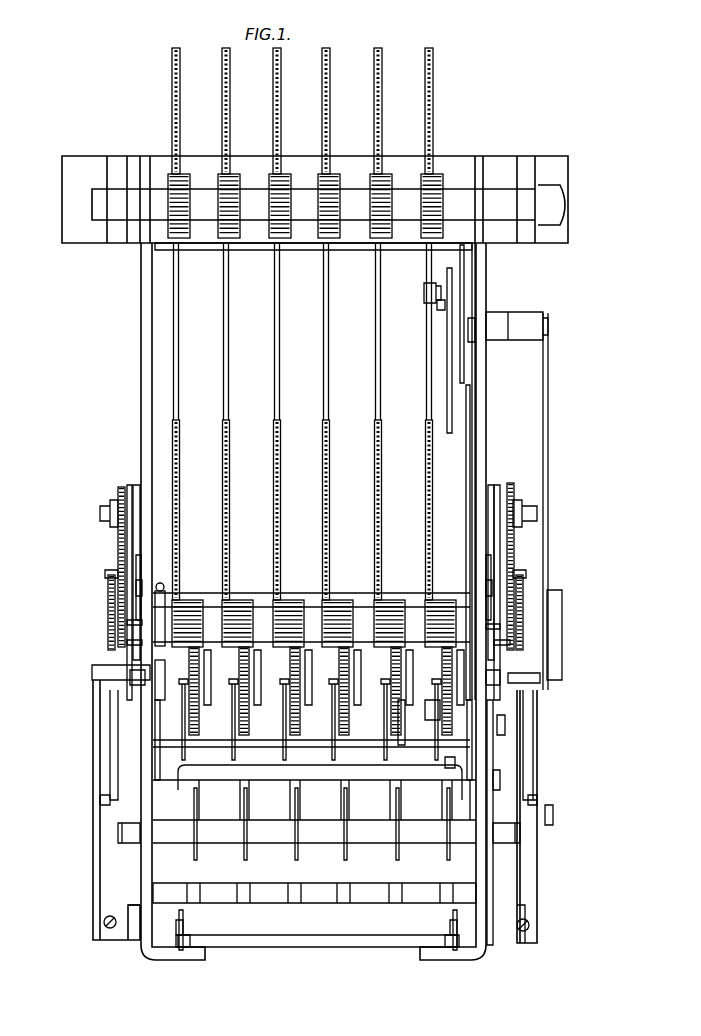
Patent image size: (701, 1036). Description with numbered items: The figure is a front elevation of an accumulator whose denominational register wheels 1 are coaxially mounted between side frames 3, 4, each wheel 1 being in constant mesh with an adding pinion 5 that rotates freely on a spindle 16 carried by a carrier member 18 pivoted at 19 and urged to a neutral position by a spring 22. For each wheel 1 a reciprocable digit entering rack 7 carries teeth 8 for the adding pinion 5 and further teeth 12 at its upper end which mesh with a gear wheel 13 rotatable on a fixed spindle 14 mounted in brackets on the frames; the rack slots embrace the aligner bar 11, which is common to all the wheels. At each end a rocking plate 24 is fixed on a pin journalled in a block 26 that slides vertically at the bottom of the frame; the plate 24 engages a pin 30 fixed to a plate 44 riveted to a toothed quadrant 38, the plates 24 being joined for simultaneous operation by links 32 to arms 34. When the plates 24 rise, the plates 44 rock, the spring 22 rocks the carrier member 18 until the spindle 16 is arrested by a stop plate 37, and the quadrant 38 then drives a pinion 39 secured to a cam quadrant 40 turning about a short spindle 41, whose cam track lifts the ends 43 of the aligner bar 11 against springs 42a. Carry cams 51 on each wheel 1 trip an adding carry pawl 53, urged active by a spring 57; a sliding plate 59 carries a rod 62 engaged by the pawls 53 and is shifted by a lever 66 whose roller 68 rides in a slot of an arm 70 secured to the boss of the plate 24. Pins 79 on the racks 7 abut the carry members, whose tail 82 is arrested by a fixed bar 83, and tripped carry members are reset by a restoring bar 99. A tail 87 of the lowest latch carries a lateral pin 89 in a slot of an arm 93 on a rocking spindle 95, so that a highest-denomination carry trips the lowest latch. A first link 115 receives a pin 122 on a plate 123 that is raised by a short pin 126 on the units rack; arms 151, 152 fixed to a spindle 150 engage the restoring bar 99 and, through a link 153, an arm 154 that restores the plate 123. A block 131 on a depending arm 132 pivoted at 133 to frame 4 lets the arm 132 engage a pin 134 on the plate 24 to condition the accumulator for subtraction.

The denominational register wheel 1 is at (182, 724).
The side frame 3 is at (147, 408).
The side frame 4 is at (482, 292).
The adding pinion 5 is at (289, 612).
The digit entering rack 7 is at (275, 358).
The rack teeth 8 is at (273, 530).
The aligner bar 11 is at (363, 602).
The further teeth 12 is at (425, 138).
The gear wheel 13 is at (427, 243).
The fixed spindle 14 is at (440, 190).
The spindle 16 is at (127, 622).
The carrier member 18 is at (127, 642).
The pivot 19 is at (142, 678).
The spring 22 is at (108, 600).
The rocking plate 24 is at (100, 733).
The block 26 is at (128, 935).
The pin 30 is at (100, 678).
The link 32 is at (103, 797).
The arm 34 is at (110, 757).
The stop plate 37 is at (140, 568).
The toothed quadrant 38 is at (133, 555).
The pinion 39 is at (120, 488).
The cam quadrant 40 is at (127, 535).
The short spindle 41 is at (100, 513).
The springs 42a is at (162, 597).
The aligner bar ends 43 is at (140, 588).
The plate 44 is at (108, 580).
The carry cam 51 is at (237, 680).
The adding carry pawl 53 is at (389, 713).
The spring 57 is at (372, 783).
The sliding plate 59 is at (160, 737).
The rod 62 is at (399, 746).
The lever 66 is at (492, 843).
The roller 68 is at (125, 833).
The arm 70 is at (100, 875).
The pin 79 is at (500, 680).
The tail 82 is at (399, 858).
The fixed bar 83 is at (387, 890).
The tail 87 is at (184, 918).
The lateral pin 89 is at (178, 920).
The arm 93 is at (190, 936).
The rocking spindle 95 is at (287, 947).
The restoring bar 99 is at (250, 768).
The first link 115 is at (450, 372).
The pin 122 is at (425, 285).
The plate 123 is at (462, 350).
The short pin 126 is at (437, 306).
The block 131 is at (562, 605).
The depending arm 132 is at (548, 483).
The pivot 133 is at (547, 337).
The pin 134 is at (553, 815).
The spindle 150 is at (428, 700).
The arm 151 is at (500, 782).
The arm 152 is at (455, 760).
The link 153 is at (475, 447).
The arm 154 is at (473, 342).